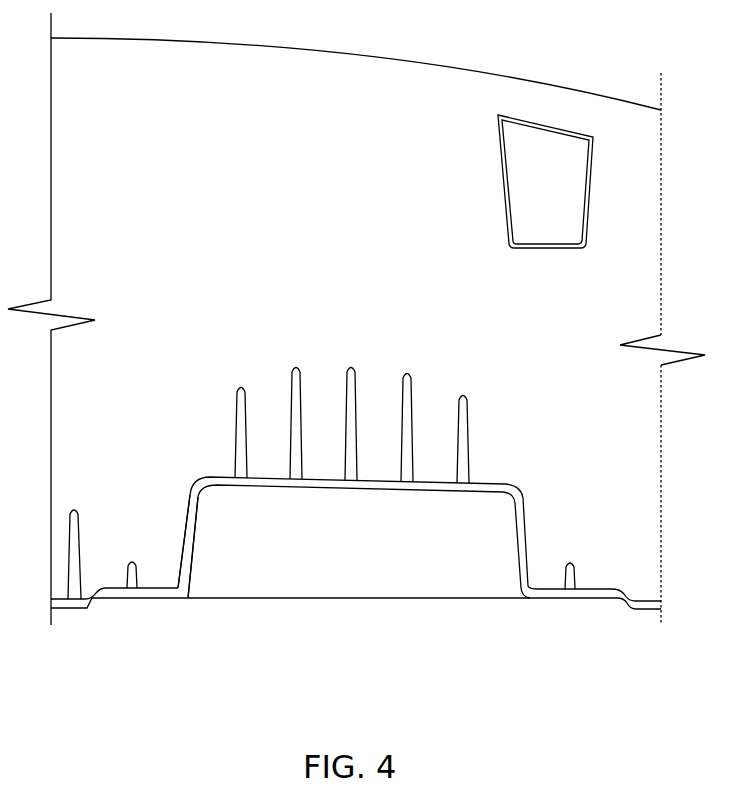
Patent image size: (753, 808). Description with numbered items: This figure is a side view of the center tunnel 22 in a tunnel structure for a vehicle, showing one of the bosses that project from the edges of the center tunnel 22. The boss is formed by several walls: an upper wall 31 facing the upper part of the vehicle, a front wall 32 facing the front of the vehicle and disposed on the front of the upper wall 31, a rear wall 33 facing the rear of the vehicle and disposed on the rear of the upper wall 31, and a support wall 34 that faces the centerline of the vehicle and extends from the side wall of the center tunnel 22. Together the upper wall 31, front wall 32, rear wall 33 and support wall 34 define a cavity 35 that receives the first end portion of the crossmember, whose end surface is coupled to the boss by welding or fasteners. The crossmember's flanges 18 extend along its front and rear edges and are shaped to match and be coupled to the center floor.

The flange 18 is at (113, 594).
The center tunnel 22 is at (630, 248).
The upper wall 31 is at (495, 485).
The front wall 32 is at (189, 540).
The rear wall 33 is at (437, 517).
The support wall 34 is at (275, 583).
The cavity 35 is at (371, 552).